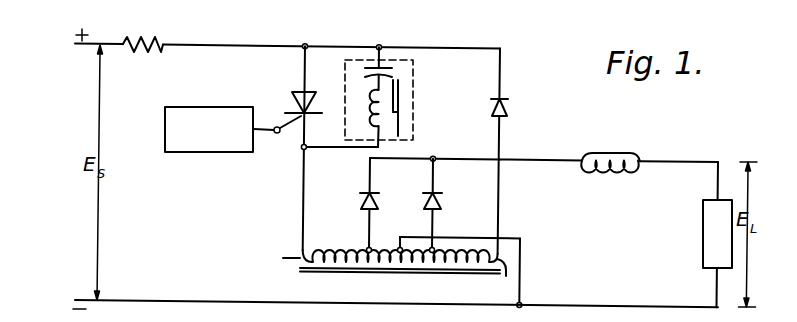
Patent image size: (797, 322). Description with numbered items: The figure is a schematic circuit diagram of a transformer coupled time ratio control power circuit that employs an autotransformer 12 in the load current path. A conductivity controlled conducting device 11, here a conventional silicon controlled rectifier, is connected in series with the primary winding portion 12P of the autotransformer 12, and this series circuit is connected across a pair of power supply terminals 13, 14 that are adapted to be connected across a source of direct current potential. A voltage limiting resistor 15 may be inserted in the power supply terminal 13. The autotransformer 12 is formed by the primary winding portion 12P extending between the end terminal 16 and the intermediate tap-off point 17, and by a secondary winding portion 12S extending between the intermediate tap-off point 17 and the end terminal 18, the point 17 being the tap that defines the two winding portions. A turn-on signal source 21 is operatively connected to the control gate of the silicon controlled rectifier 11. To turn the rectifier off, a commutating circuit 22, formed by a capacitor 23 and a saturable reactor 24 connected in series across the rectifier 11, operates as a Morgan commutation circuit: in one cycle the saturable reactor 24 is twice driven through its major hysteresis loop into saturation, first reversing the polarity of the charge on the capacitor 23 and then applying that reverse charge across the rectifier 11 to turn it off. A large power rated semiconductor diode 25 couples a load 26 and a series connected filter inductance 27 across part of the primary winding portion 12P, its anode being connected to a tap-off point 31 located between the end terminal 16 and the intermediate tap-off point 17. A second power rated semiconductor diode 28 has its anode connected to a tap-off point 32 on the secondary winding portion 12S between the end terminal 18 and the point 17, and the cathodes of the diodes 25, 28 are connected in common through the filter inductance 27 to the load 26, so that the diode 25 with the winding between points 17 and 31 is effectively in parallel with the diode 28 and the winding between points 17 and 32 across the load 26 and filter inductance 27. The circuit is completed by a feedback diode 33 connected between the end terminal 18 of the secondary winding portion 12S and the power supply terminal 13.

The conductivity controlled conducting device 11 is at (297, 95).
The autotransformer 12 is at (401, 298).
The primary winding portion 12P is at (340, 264).
The secondary winding portion 12S is at (470, 264).
The power supply terminal 13 is at (97, 43).
The power supply terminal 14 is at (147, 300).
The voltage limiting resistor 15 is at (146, 37).
The end terminal 16 is at (281, 258).
The intermediate tap-off point 17 is at (399, 246).
The end terminal 18 is at (500, 279).
The turn-on signal source 21 is at (165, 128).
The commutating circuit 22 is at (413, 108).
The capacitor 23 is at (386, 66).
The saturable reactor 24 is at (376, 120).
The semiconductor diode 25 is at (360, 203).
The load 26 is at (703, 229).
The filter inductance 27 is at (607, 156).
The semiconductor diode 28 is at (438, 195).
The tap-off point 31 is at (366, 247).
The tap-off point 32 is at (435, 247).
The feedback diode 33 is at (511, 104).